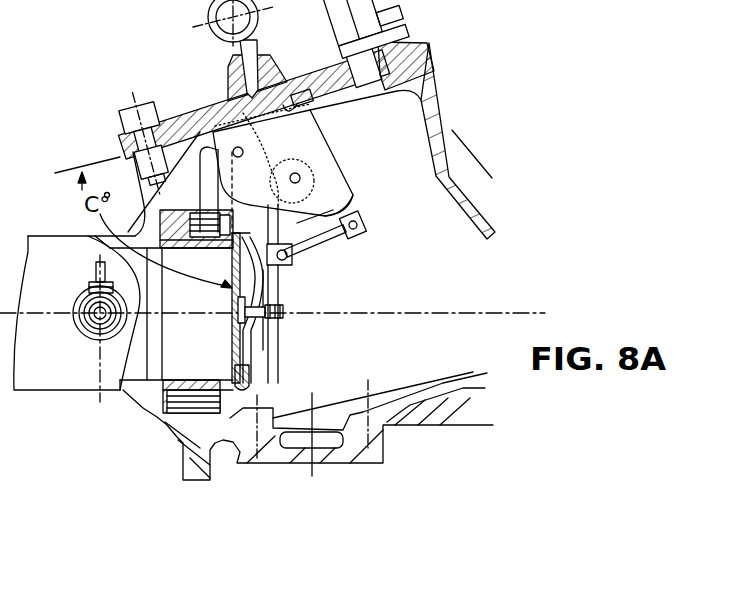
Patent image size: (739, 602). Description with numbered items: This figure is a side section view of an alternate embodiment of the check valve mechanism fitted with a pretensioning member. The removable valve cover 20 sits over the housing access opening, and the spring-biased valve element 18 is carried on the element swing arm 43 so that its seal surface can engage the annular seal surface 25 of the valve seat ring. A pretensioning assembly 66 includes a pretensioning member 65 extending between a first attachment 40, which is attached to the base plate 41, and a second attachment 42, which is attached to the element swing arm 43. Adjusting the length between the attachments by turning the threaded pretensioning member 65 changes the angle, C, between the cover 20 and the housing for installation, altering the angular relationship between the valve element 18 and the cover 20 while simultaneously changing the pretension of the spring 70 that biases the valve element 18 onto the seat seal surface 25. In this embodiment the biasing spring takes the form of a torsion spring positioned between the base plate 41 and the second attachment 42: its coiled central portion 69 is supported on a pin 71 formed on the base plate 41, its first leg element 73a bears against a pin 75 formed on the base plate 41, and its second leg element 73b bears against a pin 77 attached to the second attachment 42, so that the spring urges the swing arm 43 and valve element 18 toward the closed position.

The valve element 18 is at (257, 369).
The valve cover 20 is at (207, 110).
The annular seal surface 25 is at (232, 376).
The first attachment 40 is at (362, 226).
The base plate 41 is at (318, 142).
The second attachment 42 is at (288, 266).
The element swing arm 43 is at (252, 352).
The pretensioning member 65 is at (158, 398).
The pretensioning assembly 66 is at (314, 246).
The coiled central portion 69 is at (350, 203).
The spring 70 is at (300, 180).
The pin 71 is at (305, 172).
The first leg element 73a is at (263, 157).
The second leg element 73b is at (348, 240).
The pin 75 is at (232, 147).
The pin 77 is at (280, 268).